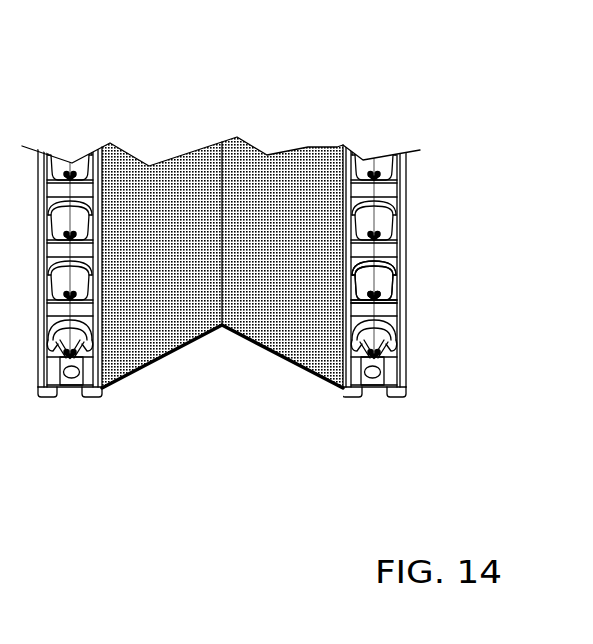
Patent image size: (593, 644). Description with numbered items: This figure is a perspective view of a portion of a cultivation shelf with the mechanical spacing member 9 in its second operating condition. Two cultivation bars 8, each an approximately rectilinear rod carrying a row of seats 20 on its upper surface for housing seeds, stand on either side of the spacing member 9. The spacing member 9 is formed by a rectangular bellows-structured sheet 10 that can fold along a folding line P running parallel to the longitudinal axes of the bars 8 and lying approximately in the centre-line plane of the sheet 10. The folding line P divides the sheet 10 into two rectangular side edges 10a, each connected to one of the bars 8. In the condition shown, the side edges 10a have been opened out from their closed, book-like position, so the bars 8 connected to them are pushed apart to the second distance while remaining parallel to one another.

The cultivation bar 8 is at (56, 196).
The mechanical spacing member 9 is at (291, 190).
The rectangular bellows-structured sheet 10 is at (322, 330).
The rectangular side edge 10a is at (165, 343).
The seat 20 is at (386, 278).
The folding line P is at (226, 188).